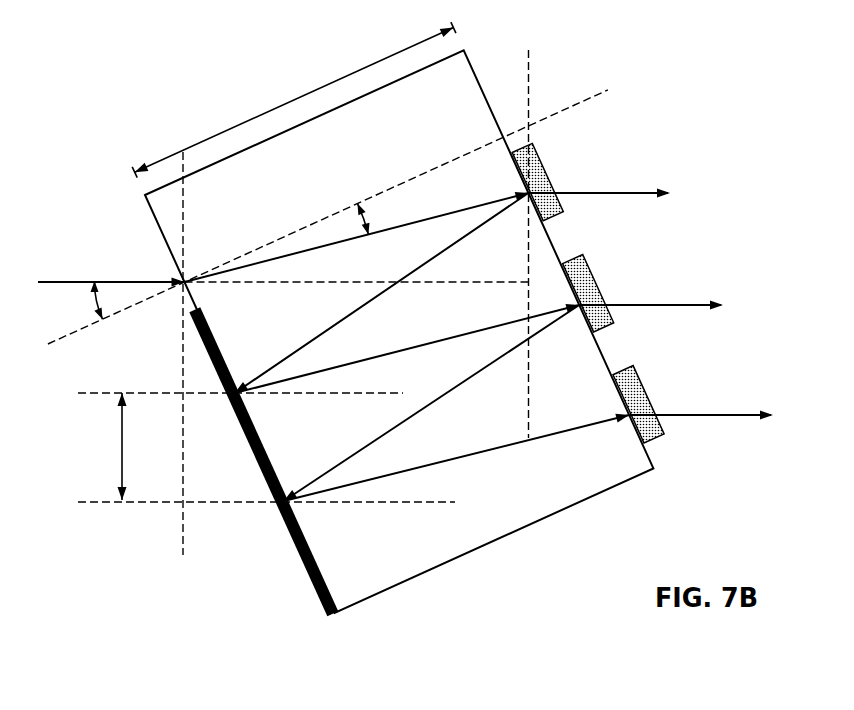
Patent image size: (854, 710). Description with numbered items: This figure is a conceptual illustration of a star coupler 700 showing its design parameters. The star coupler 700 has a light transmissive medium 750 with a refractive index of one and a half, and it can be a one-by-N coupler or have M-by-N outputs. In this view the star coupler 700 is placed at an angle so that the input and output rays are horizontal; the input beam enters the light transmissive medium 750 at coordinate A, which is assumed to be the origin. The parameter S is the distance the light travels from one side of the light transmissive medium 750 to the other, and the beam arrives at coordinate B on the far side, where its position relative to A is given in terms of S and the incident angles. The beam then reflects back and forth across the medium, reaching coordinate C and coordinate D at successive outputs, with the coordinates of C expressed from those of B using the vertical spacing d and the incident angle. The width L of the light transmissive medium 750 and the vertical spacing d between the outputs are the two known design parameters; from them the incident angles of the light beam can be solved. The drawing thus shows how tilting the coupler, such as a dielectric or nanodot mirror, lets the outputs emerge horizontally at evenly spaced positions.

The star coupler 700 is at (180, 115).
The light transmissive medium 750 is at (454, 53).
The coordinate A is at (126, 295).
The coordinate B is at (583, 181).
The coordinate C is at (643, 301).
The coordinate D is at (692, 409).
The parameter s S is at (357, 237).
The width L is at (294, 100).
The vertical spacing d is at (114, 446).